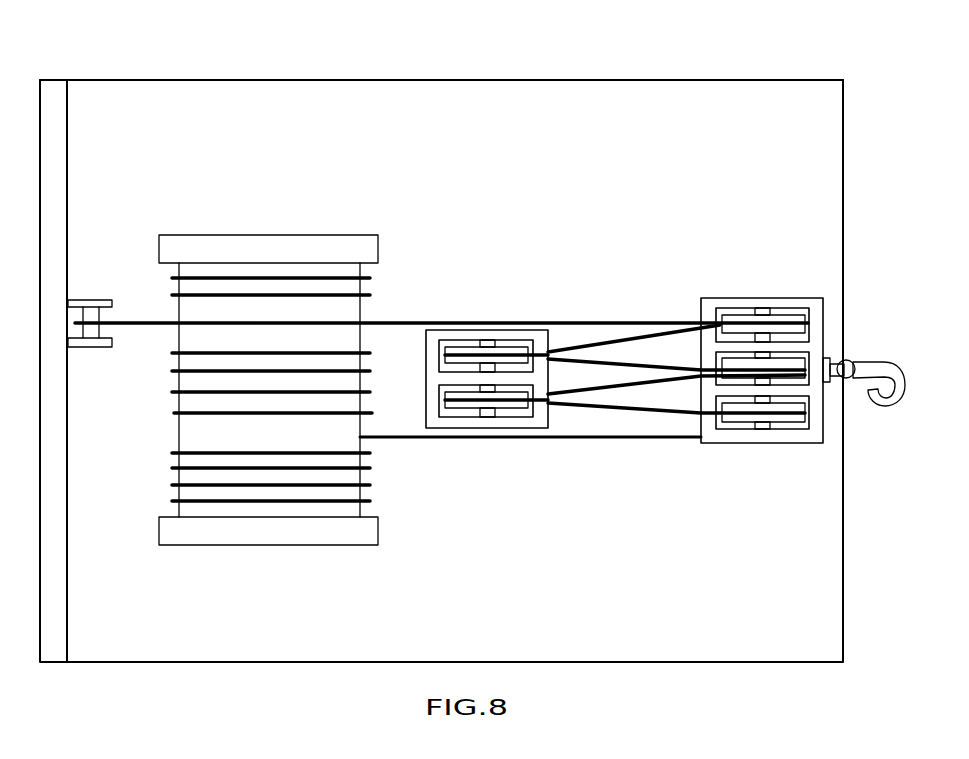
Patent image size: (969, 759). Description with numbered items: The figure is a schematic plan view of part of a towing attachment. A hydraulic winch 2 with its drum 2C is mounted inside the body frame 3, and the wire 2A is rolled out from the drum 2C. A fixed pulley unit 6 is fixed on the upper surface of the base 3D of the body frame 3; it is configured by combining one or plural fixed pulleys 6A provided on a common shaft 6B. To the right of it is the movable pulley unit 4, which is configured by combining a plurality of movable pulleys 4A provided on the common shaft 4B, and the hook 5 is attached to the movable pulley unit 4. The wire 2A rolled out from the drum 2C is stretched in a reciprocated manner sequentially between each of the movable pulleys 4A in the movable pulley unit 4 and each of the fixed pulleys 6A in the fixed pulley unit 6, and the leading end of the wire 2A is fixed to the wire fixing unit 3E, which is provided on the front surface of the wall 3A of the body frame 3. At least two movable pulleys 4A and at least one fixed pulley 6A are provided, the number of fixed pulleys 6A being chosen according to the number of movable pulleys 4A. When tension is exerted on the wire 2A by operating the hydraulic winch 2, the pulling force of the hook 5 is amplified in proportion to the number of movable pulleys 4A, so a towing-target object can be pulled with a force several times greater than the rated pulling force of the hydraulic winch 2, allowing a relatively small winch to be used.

The hydraulic winch 2 is at (268, 350).
The wire 2A is at (628, 323).
The drum 2C is at (272, 250).
The body frame 3 is at (237, 74).
The wall 3A is at (55, 160).
The base 3D is at (522, 113).
The wire fixing unit 3E is at (84, 300).
The movable pulley unit 4 is at (738, 356).
The movable pulley 4A is at (737, 320).
The common shaft 4B is at (762, 311).
The hook 5 is at (893, 362).
The fixed pulley unit 6 is at (499, 362).
The fixed pulley 6A is at (523, 356).
The common shaft 6B is at (481, 344).